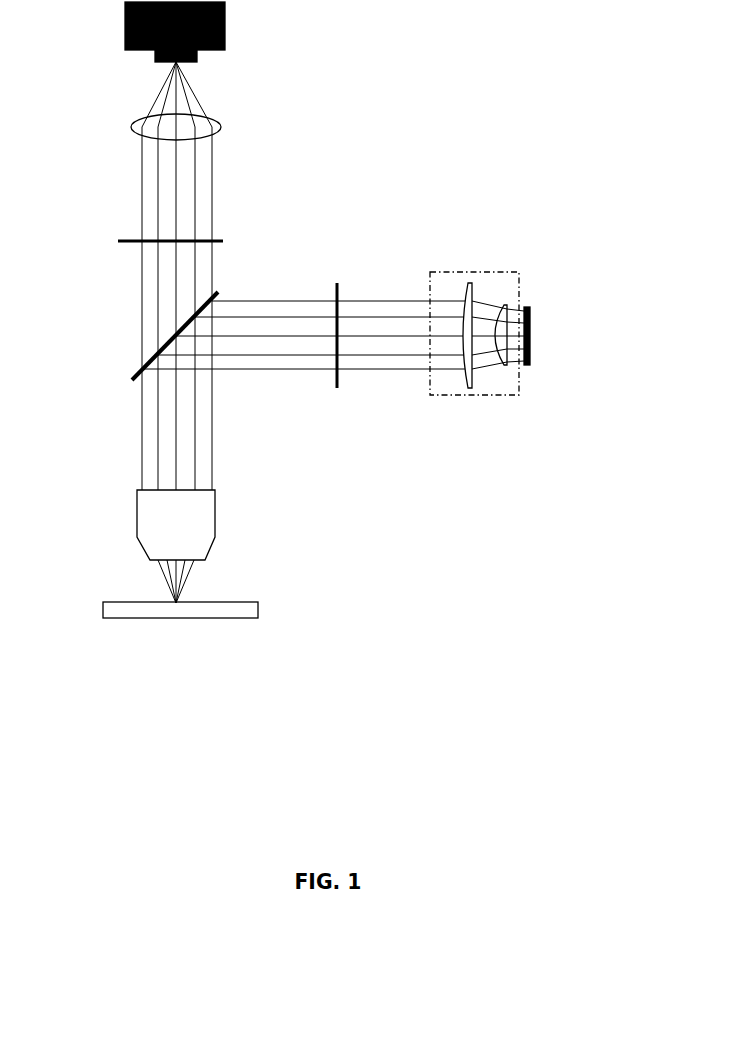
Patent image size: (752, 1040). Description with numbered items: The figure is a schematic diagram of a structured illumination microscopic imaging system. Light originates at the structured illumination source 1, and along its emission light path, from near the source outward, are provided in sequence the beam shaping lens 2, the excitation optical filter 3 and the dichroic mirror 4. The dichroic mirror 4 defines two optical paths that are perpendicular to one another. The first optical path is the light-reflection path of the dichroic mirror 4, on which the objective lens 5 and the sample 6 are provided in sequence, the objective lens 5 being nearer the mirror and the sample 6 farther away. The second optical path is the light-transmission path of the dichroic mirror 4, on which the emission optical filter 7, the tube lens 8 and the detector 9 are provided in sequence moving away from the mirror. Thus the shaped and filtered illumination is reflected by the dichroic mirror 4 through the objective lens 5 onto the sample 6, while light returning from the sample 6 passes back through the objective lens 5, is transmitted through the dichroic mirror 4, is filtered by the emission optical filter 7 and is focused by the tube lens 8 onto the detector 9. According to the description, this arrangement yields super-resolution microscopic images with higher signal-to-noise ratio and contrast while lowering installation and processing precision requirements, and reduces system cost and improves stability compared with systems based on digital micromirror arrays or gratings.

The structured illumination source 1 is at (531, 305).
The beam shaping lens 2 is at (507, 397).
The excitation optical filter 3 is at (340, 283).
The dichroic mirror 4 is at (132, 374).
The objective lens 5 is at (202, 517).
The sample 6 is at (247, 618).
The emission optical filter 7 is at (118, 240).
The tube lens 8 is at (137, 127).
The detector 9 is at (125, 28).